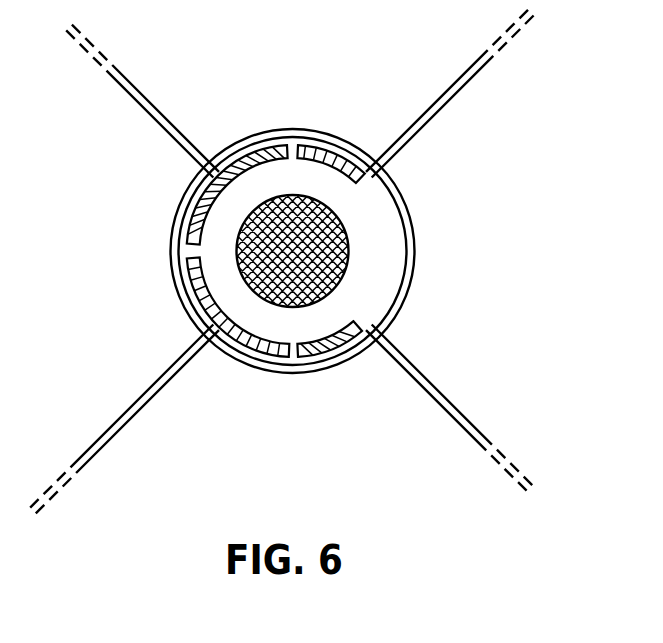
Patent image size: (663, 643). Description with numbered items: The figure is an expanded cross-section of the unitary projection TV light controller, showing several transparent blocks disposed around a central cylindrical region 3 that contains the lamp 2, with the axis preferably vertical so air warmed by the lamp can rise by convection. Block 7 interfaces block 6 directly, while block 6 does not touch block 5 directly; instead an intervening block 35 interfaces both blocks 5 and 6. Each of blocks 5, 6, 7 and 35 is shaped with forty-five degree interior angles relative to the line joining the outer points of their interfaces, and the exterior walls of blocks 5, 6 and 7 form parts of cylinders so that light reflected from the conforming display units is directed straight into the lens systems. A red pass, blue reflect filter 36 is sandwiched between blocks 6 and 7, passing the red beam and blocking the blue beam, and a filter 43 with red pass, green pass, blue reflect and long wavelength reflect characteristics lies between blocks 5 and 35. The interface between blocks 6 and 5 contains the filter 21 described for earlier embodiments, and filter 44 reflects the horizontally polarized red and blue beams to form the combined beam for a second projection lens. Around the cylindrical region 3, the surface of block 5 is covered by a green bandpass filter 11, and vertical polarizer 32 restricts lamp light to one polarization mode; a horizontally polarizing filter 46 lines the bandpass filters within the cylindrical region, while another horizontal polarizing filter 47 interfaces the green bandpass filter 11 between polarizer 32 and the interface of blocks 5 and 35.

The lamp 2 is at (322, 232).
The cylindrical region 3 is at (385, 253).
The green bandpass filter 11 is at (258, 371).
The horizontally polarizing filter 46 is at (188, 188).
The horizontal polarizing filter 47 is at (337, 357).
The vertical polarizer 32 is at (192, 272).
The filter 36 is at (167, 117).
The filter 44 is at (446, 89).
The filter 21 is at (117, 418).
The filter 43 is at (440, 392).
The block 6 is at (307, 85).
The block 7 is at (80, 237).
The intervening block 35 is at (515, 284).
The block 5 is at (284, 474).